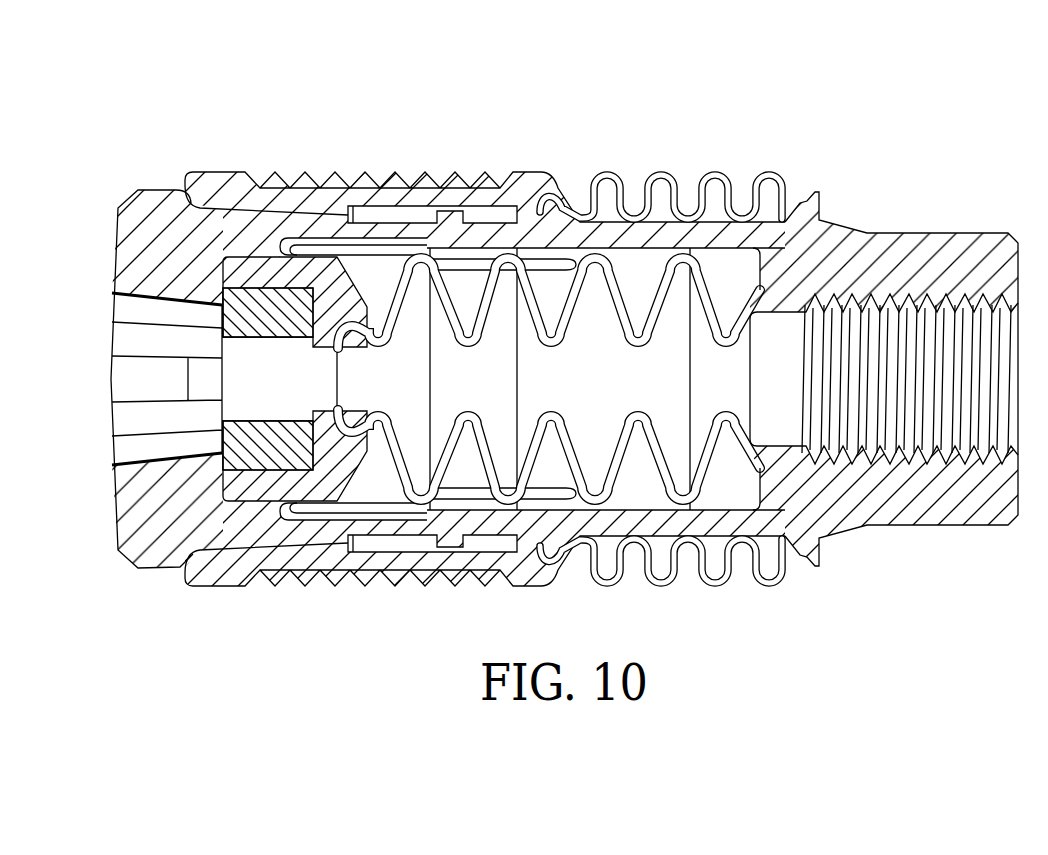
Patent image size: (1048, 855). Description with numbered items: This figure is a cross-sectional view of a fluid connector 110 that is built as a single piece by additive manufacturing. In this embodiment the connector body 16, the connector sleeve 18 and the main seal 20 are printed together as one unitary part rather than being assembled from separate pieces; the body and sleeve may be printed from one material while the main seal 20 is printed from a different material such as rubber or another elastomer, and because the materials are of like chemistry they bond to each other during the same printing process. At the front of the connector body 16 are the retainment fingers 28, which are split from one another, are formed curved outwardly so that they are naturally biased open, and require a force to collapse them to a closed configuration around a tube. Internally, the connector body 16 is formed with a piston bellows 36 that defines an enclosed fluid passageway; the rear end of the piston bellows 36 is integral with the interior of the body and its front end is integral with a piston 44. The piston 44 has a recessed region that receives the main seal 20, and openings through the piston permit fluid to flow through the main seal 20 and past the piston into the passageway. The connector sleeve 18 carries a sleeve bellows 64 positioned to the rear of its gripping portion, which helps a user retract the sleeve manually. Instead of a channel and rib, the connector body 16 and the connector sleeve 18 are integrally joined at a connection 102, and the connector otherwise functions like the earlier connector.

The fluid connector 110 is at (655, 90).
The retainment fingers 28 is at (120, 218).
The connector sleeve 18 is at (519, 158).
The connector body 16 is at (392, 212).
The piston 44 is at (265, 270).
The main seal 20 is at (246, 330).
The piston bellows 36 is at (626, 424).
The sleeve bellows 64 is at (716, 172).
The connection 102 is at (816, 202).